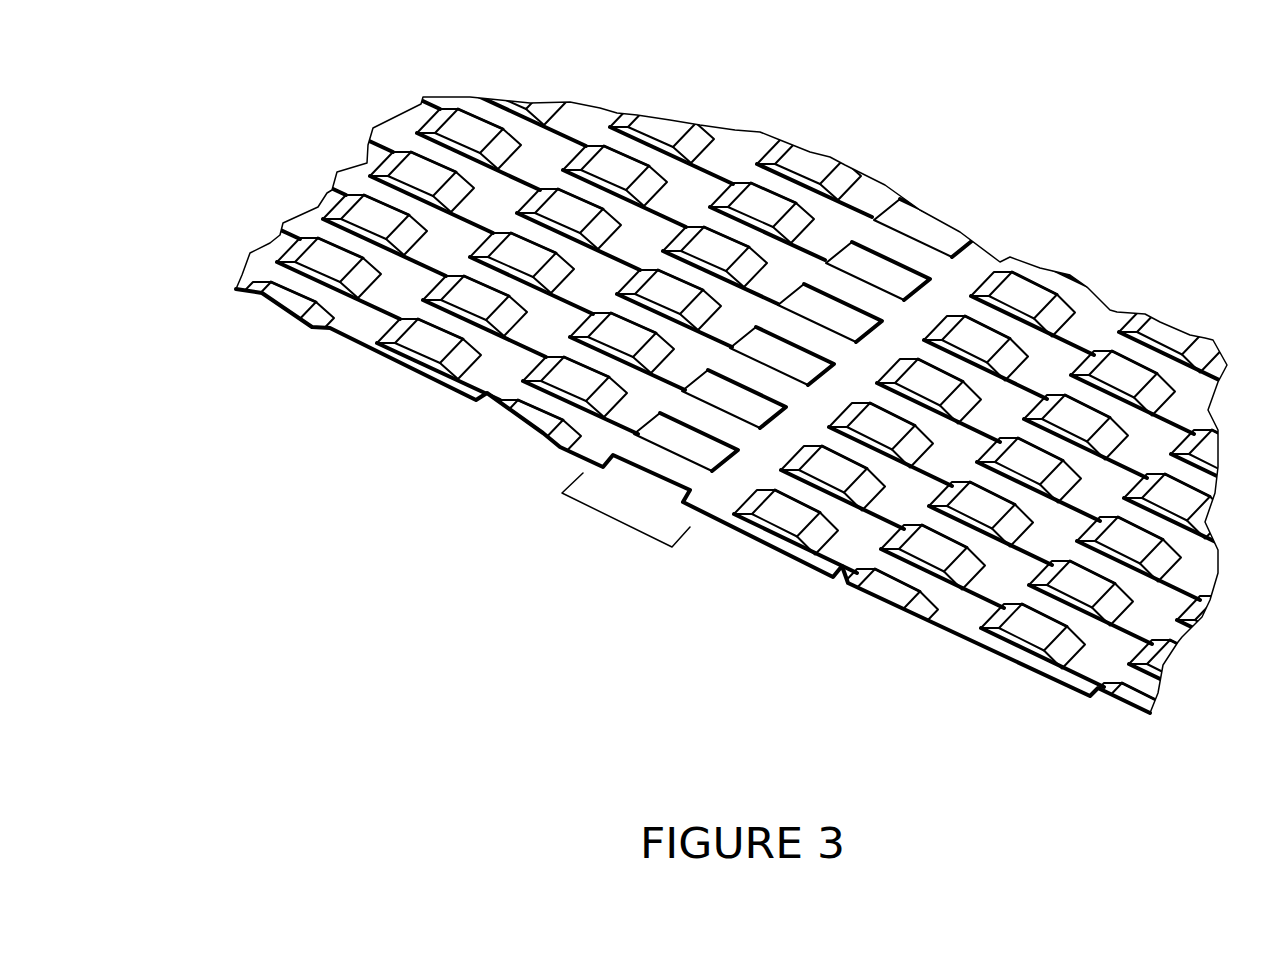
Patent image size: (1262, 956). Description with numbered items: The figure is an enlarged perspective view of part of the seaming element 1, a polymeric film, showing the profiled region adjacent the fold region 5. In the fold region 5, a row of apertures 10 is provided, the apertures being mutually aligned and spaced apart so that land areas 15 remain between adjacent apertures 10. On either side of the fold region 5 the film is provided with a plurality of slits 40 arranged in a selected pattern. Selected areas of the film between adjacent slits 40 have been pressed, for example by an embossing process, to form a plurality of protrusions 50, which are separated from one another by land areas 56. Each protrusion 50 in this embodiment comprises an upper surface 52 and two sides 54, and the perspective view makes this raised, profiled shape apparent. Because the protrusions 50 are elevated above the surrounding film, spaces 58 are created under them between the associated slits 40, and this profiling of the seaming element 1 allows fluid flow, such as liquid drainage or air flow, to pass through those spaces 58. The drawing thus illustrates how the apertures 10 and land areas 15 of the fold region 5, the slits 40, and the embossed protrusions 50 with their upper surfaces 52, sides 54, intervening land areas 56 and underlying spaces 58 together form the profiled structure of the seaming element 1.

The seaming element 1 is at (274, 90).
The fold region 5 is at (615, 520).
The apertures 10 is at (905, 285).
The land areas 15 is at (890, 242).
The slits 40 is at (1120, 318).
The protrusions 50 is at (598, 135).
The upper surface 52 is at (469, 127).
The sides 54 is at (360, 278).
The land areas 56 is at (492, 360).
The spaces 58 is at (778, 527).